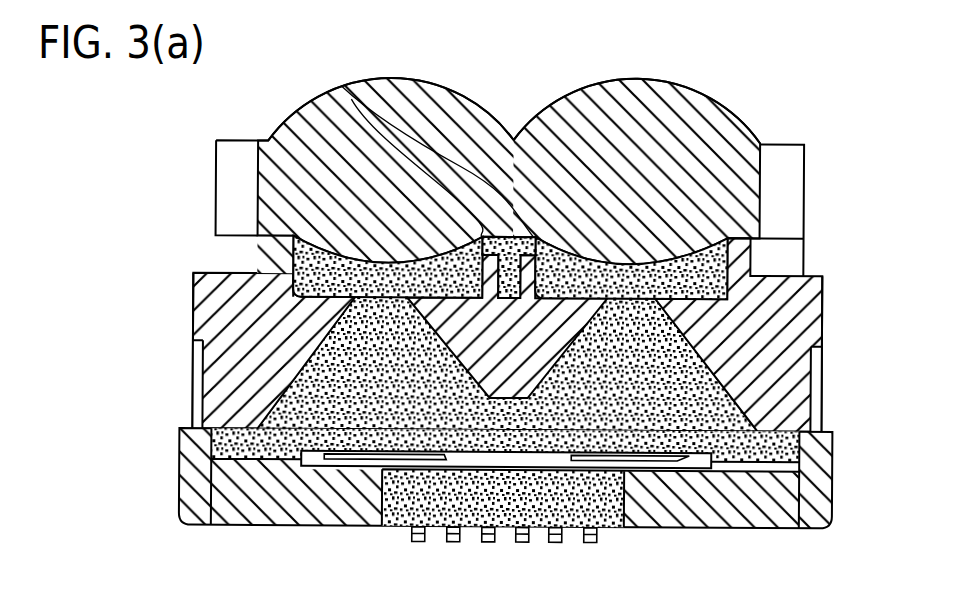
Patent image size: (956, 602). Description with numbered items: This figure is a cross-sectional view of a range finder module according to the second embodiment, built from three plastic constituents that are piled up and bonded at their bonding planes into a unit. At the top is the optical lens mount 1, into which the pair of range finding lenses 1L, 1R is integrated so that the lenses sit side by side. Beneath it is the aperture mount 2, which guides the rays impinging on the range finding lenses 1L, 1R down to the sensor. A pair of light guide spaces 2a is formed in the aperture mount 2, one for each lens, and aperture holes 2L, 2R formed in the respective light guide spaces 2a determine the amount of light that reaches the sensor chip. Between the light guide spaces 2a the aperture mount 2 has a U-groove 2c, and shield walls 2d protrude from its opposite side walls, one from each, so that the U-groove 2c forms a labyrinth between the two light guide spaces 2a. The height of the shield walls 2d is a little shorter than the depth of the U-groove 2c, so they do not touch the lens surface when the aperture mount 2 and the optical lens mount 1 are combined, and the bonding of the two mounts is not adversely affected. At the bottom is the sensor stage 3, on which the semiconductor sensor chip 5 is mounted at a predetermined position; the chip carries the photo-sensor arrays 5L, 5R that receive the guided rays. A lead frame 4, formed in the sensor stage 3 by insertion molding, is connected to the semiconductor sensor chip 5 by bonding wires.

The optical lens mount 1 is at (693, 95).
The range finding lens 1L is at (393, 90).
The range finding lens 1R is at (634, 93).
The aperture mount 2 is at (824, 302).
The light guide space 2a is at (747, 237).
The U-groove 2c is at (538, 237).
The shield wall 2d is at (340, 87).
The aperture hole 2L is at (377, 314).
The aperture hole 2R is at (620, 318).
The sensor stage 3 is at (790, 481).
The lead frame 4 is at (588, 543).
The semiconductor sensor chip 5 is at (470, 463).
The photo-sensor array 5L is at (373, 462).
The photo-sensor array 5R is at (675, 462).